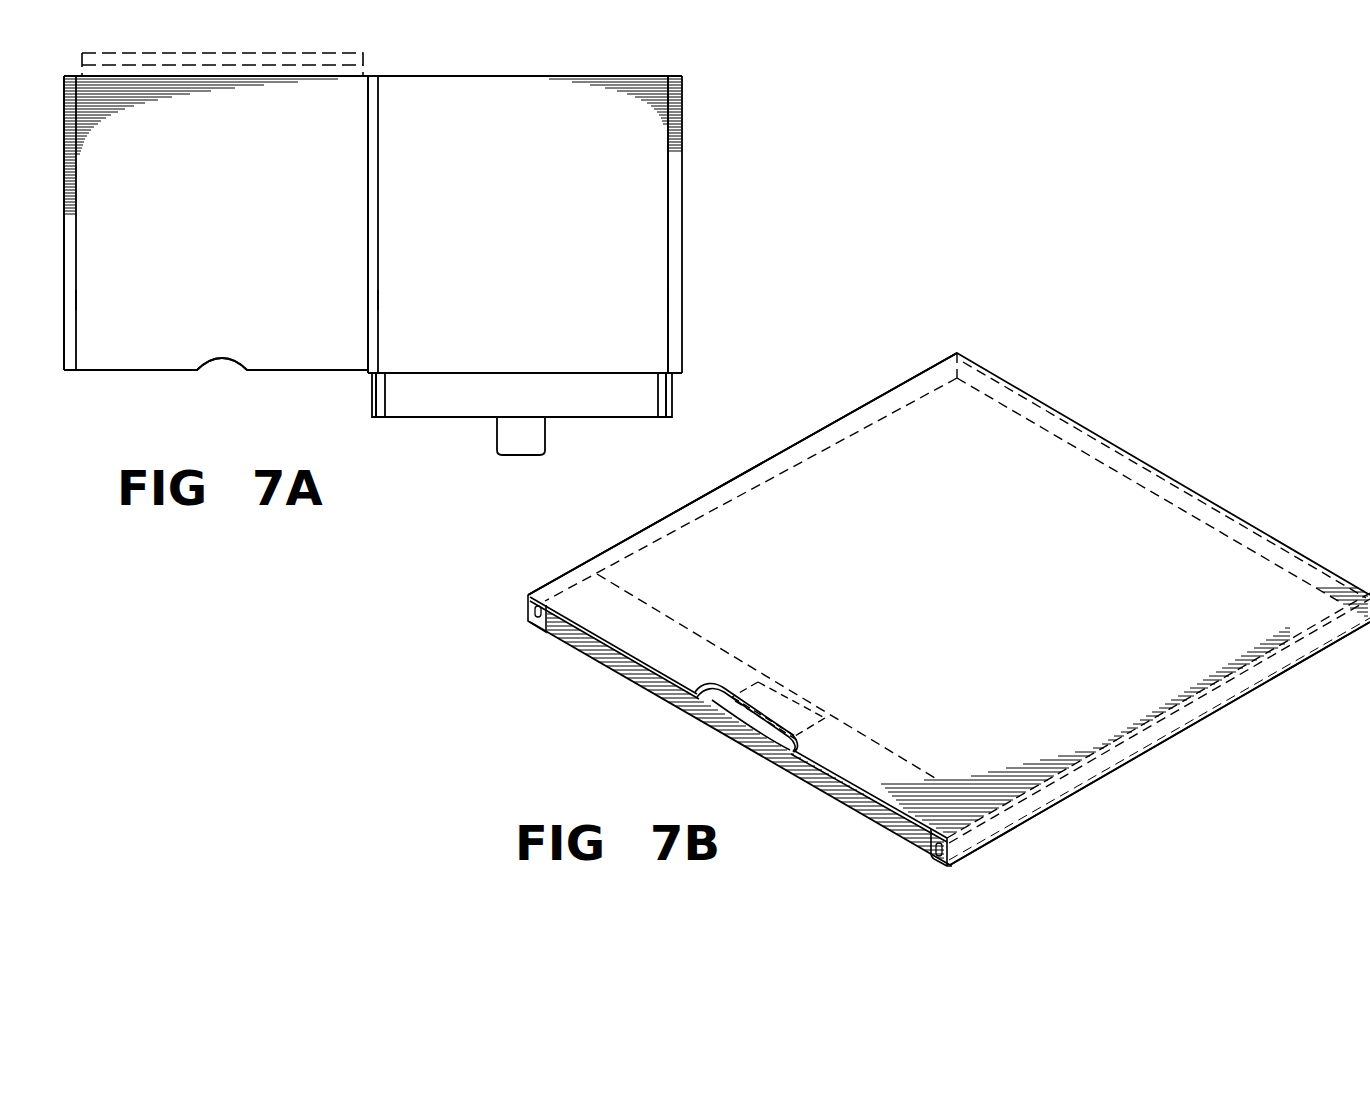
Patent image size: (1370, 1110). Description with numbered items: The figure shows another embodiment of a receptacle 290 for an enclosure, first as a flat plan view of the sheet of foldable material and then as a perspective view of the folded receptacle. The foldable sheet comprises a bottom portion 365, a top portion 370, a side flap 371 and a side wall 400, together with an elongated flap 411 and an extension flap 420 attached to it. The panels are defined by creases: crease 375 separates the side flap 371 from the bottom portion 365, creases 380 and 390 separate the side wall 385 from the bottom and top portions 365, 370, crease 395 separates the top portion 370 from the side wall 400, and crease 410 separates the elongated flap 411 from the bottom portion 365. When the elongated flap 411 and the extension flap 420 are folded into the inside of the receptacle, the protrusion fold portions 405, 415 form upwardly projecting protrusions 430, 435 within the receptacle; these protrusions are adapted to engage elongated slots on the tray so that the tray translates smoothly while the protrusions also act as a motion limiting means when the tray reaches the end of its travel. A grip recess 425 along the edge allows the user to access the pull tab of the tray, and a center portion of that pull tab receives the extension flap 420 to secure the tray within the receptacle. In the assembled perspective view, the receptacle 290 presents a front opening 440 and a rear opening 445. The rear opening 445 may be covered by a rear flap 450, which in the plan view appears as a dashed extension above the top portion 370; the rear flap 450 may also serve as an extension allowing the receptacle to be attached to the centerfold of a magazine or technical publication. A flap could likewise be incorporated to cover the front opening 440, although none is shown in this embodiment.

In FIG. 7A, the receptacle 290 is at (700, 76).
In FIG. 7B, the receptacle 290 is at (982, 352).
In FIG. 7A, the bottom portion 365 is at (542, 153).
In FIG. 7A, the top portion 370 is at (244, 153).
In FIG. 7B, the top portion 370 is at (915, 408).
In FIG. 7A, the side flap 371 is at (668, 230).
In FIG. 7A, the crease 375 is at (668, 298).
In FIG. 7A, the crease 380 is at (378, 298).
In FIG. 7A, the side wall 385 is at (368, 230).
In FIG. 7B, the side wall 385 is at (640, 528).
In FIG. 7A, the crease 390 is at (368, 298).
In FIG. 7A, the crease 395 is at (78, 298).
In FIG. 7A, the side wall 400 is at (78, 230).
In FIG. 7B, the side wall 400 is at (1048, 793).
In FIG. 7A, the protrusion fold portion 405 is at (386, 404).
In FIG. 7A, the crease 410 is at (518, 373).
In FIG. 7A, the elongated flap 411 is at (547, 403).
In FIG. 7B, the elongated flap 411 is at (723, 672).
In FIG. 7A, the protrusion fold portion 415 is at (658, 406).
In FIG. 7A, the extension flap 420 is at (521, 446).
In FIG. 7B, the extension flap 420 is at (795, 712).
In FIG. 7A, the grip recess 425 is at (222, 370).
In FIG. 7B, the grip recess 425 is at (742, 733).
In FIG. 7B, the protrusion 430 is at (553, 618).
In FIG. 7B, the protrusion 435 is at (928, 840).
In FIG. 7B, the front opening 440 is at (625, 668).
In FIG. 7B, the rear opening 445 is at (1073, 438).
In FIG. 7A, the rear flap 450 is at (362, 62).